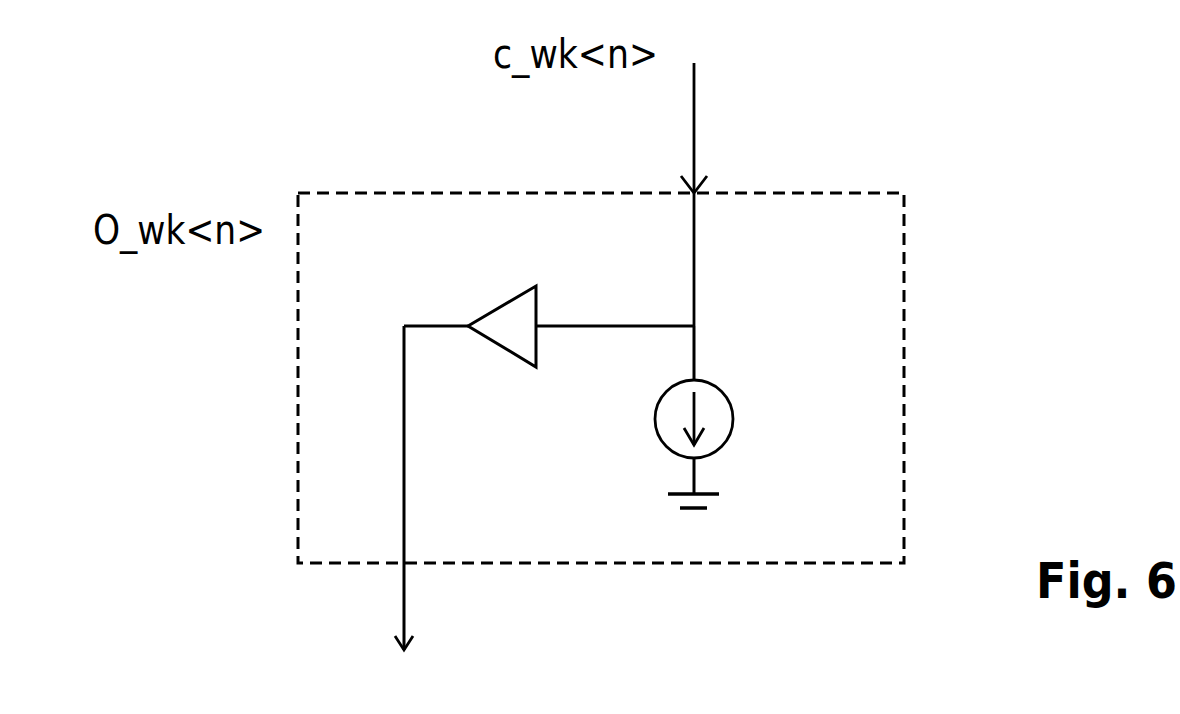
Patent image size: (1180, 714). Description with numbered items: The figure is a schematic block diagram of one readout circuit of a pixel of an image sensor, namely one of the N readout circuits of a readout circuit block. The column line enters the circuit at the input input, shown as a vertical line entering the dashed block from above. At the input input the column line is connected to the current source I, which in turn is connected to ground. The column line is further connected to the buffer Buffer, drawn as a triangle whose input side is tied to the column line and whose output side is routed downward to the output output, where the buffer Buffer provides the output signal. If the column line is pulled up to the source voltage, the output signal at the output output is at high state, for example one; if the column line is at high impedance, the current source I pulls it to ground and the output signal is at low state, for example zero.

The element input is at (747, 194).
The buffer Buffer is at (549, 299).
The element output is at (476, 488).
The current source I is at (710, 417).